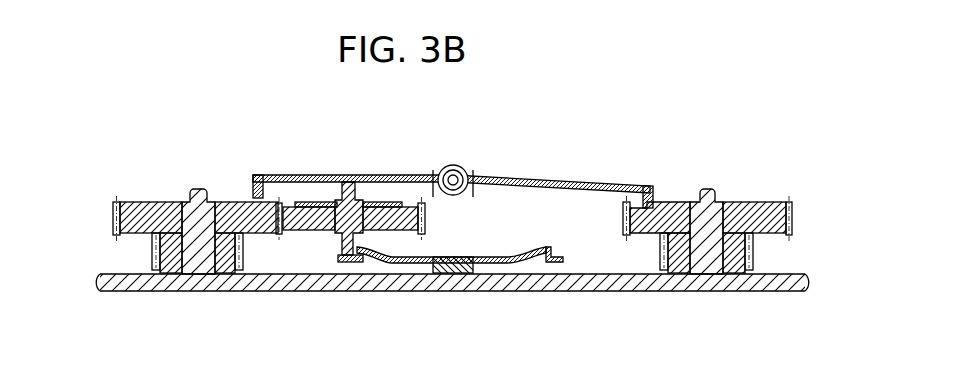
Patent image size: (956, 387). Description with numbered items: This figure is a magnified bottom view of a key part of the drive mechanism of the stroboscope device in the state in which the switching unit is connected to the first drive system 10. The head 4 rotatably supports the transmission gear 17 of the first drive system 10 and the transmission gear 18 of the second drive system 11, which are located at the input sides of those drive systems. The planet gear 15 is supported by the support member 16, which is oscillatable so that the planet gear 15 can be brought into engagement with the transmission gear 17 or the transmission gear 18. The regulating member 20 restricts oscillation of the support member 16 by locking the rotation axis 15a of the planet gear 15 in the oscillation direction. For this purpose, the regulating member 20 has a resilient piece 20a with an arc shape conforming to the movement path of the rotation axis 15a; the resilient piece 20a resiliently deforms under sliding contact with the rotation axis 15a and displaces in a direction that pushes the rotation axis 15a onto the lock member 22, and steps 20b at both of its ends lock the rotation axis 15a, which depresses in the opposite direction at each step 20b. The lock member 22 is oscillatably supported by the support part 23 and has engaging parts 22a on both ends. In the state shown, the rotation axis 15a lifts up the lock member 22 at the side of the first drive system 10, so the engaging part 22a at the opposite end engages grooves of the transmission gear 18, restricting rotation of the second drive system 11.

The head 4 is at (195, 280).
The transmission gear 17 is at (185, 206).
The first drive system 10 is at (140, 202).
The transmission gear 18 is at (724, 201).
The second drive system 11 is at (768, 202).
The planet gear 15 is at (404, 207).
The rotation axis 15a is at (346, 186).
The support member 16 is at (380, 202).
The lock member 22 is at (557, 178).
The engaging parts 22a is at (252, 180).
The support part 23 is at (456, 164).
The regulating member 20 is at (457, 274).
The resilient piece 20a is at (392, 261).
The steps 20b is at (350, 263).